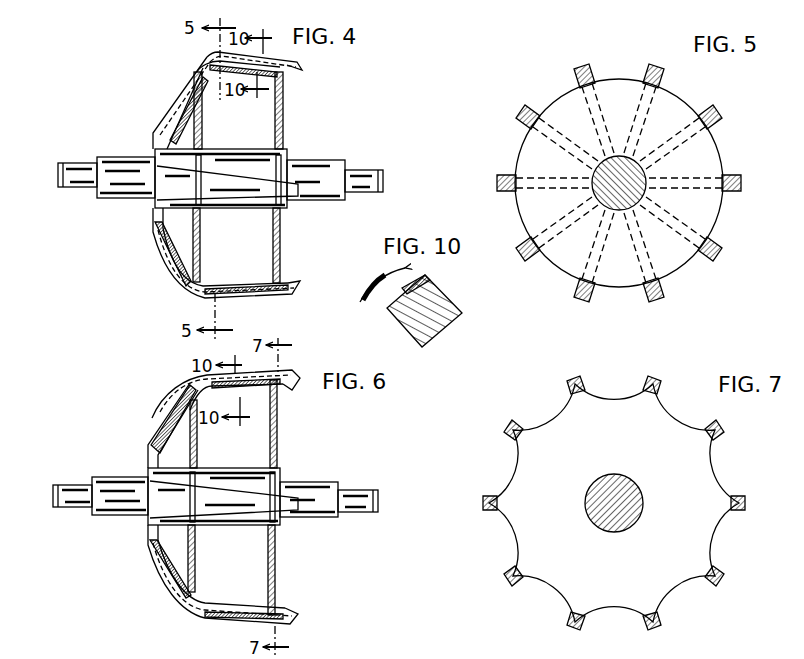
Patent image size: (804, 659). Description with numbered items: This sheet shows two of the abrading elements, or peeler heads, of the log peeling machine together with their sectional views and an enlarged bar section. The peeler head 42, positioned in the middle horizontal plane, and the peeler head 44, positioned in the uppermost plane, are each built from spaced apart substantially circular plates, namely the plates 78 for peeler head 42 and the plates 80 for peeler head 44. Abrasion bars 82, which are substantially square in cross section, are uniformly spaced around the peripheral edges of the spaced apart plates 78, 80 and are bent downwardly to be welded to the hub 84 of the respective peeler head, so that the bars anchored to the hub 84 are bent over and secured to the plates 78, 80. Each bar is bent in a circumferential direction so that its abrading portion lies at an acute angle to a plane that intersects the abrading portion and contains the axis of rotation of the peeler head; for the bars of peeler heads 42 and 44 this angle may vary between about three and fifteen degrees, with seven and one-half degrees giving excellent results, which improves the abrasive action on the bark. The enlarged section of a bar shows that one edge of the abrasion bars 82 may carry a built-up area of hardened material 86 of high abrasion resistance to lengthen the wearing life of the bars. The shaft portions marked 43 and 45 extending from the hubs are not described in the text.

In FIG. 4, the peeler head 42 is at (188, 84).
In FIG. 4, the shaft 43 is at (58, 180).
In FIG. 6, the peeler head 44 is at (187, 418).
In FIG. 6, the shaft 45 is at (55, 502).
In FIG. 4, the circular plates 78 is at (203, 132).
In FIG. 5, the circular plates 78 is at (531, 146).
In FIG. 6, the circular plates 80 is at (198, 462).
In FIG. 7, the circular plates 80 is at (523, 467).
In FIG. 4, the abrasion bars 82 is at (302, 70).
In FIG. 5, the abrasion bars 82 is at (578, 78).
In FIG. 10, the abrasion bars 82 is at (445, 319).
In FIG. 6, the abrasion bars 82 is at (288, 388).
In FIG. 7, the abrasion bars 82 is at (522, 425).
In FIG. 4, the hub 84 is at (165, 153).
In FIG. 6, the hub 84 is at (158, 475).
In FIG. 10, the built-up area of hardened material 86 is at (401, 284).